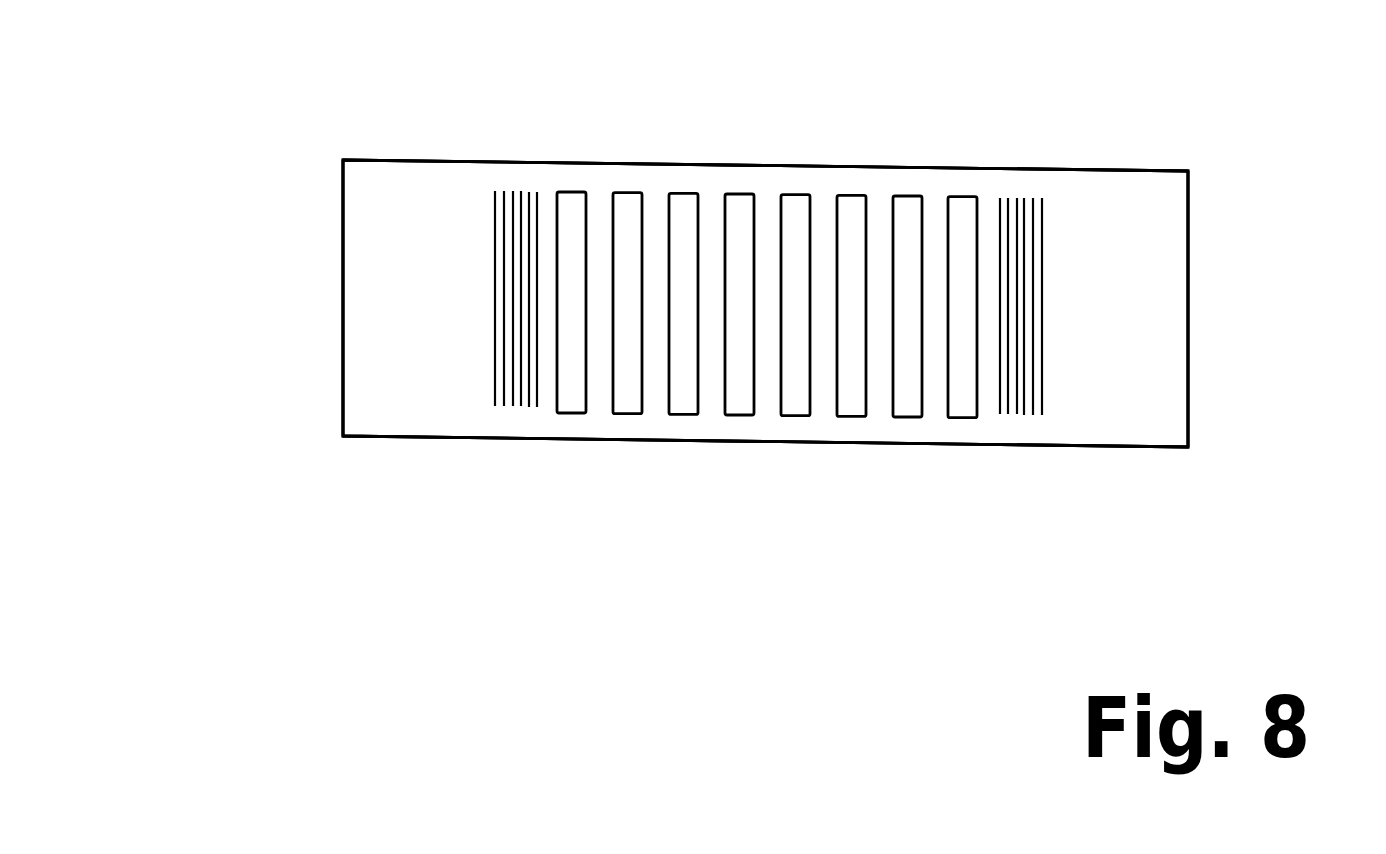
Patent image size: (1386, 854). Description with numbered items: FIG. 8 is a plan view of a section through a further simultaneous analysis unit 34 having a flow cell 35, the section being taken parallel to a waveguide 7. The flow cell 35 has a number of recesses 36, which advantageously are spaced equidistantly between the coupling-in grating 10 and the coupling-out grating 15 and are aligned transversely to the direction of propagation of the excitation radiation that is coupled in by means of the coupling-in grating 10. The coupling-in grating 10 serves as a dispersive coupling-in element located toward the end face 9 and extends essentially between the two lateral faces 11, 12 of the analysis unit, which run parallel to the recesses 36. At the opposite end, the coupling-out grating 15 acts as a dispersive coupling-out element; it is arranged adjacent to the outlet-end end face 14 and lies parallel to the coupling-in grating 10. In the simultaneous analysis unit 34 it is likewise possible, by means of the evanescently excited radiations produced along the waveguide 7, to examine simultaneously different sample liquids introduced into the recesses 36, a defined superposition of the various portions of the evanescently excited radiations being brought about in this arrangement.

The waveguide 7 is at (1100, 403).
The end face 9 is at (343, 217).
The coupling-in grating 10 is at (462, 296).
The lateral face 11 is at (427, 437).
The lateral face 12 is at (445, 160).
The outlet-end end face 14 is at (1188, 232).
The coupling-out grating 15 is at (1063, 336).
The simultaneous analysis unit 34 is at (990, 135).
The flow cell 35 is at (1120, 192).
The recesses 36 is at (905, 205).